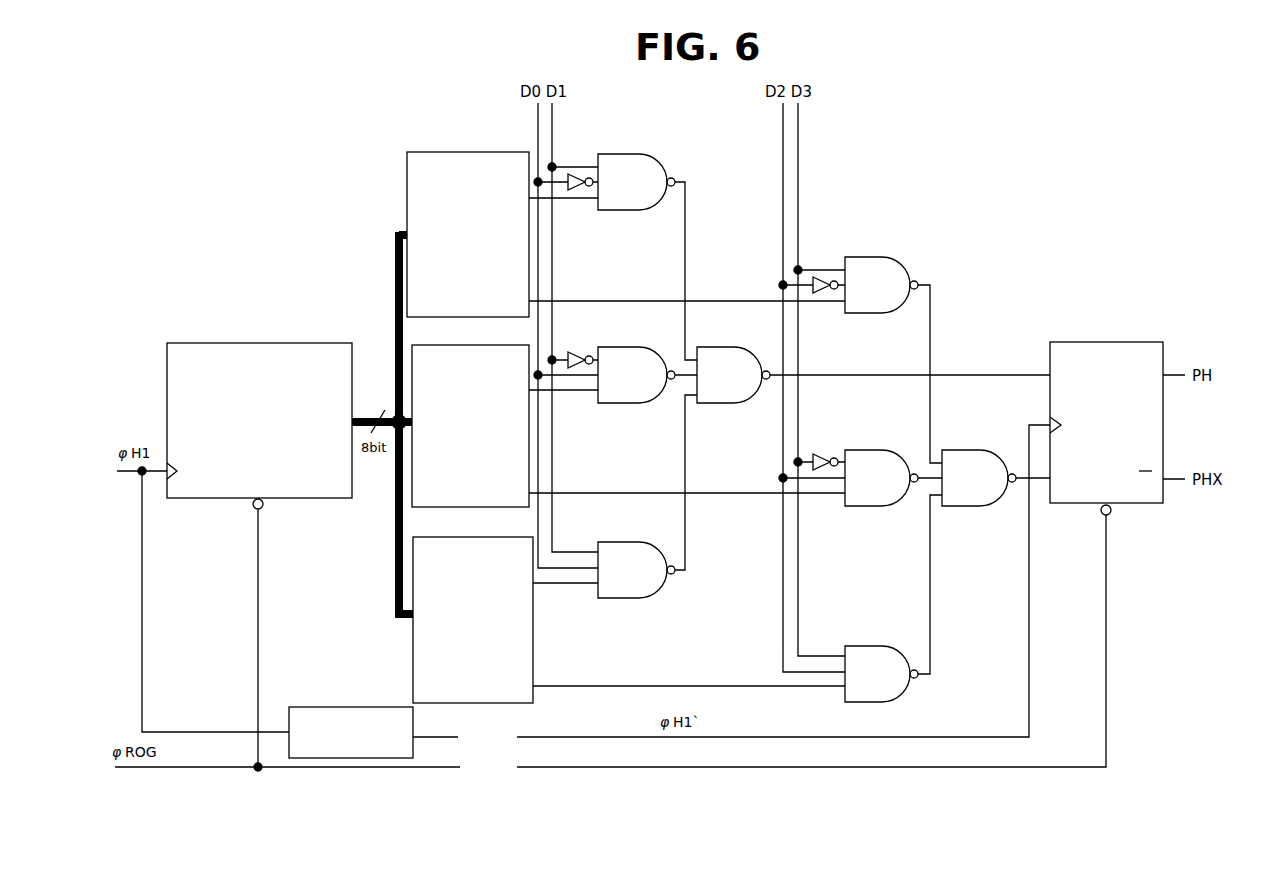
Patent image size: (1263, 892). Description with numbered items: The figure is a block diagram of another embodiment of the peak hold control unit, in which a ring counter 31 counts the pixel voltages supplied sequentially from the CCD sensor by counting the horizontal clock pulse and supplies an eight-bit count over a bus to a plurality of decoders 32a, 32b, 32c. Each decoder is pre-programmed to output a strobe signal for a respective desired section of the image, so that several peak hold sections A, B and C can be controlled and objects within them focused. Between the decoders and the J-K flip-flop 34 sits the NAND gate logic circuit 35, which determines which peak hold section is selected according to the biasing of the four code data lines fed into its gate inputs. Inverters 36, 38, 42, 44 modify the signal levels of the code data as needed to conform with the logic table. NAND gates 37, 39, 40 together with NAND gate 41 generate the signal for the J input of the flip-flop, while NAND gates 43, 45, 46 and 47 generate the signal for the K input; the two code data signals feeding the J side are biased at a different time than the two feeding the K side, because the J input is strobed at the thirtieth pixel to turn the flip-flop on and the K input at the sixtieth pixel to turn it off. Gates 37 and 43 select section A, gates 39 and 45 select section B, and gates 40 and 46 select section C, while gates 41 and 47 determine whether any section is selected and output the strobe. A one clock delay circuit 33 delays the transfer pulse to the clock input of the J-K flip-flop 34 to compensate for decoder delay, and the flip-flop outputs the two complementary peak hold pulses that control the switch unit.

The ring counter 31 is at (312, 343).
The decoder 32a is at (407, 155).
The decoder 32b is at (412, 348).
The decoder 32c is at (413, 540).
The one clock delay circuit 33 is at (352, 707).
The J-K flip-flop 34 is at (1148, 342).
The logic circuit 35 is at (912, 195).
The inverter 36 is at (576, 190).
The NAND gate 37 is at (640, 154).
The inverter 38 is at (572, 352).
The NAND gate 39 is at (640, 347).
The NAND gate 40 is at (640, 542).
The NAND gate 41 is at (742, 347).
The inverter 42 is at (818, 277).
The NAND gate 43 is at (898, 257).
The inverter 44 is at (817, 454).
The NAND gate 45 is at (890, 450).
The NAND gate 46 is at (890, 646).
The NAND gate 47 is at (988, 450).